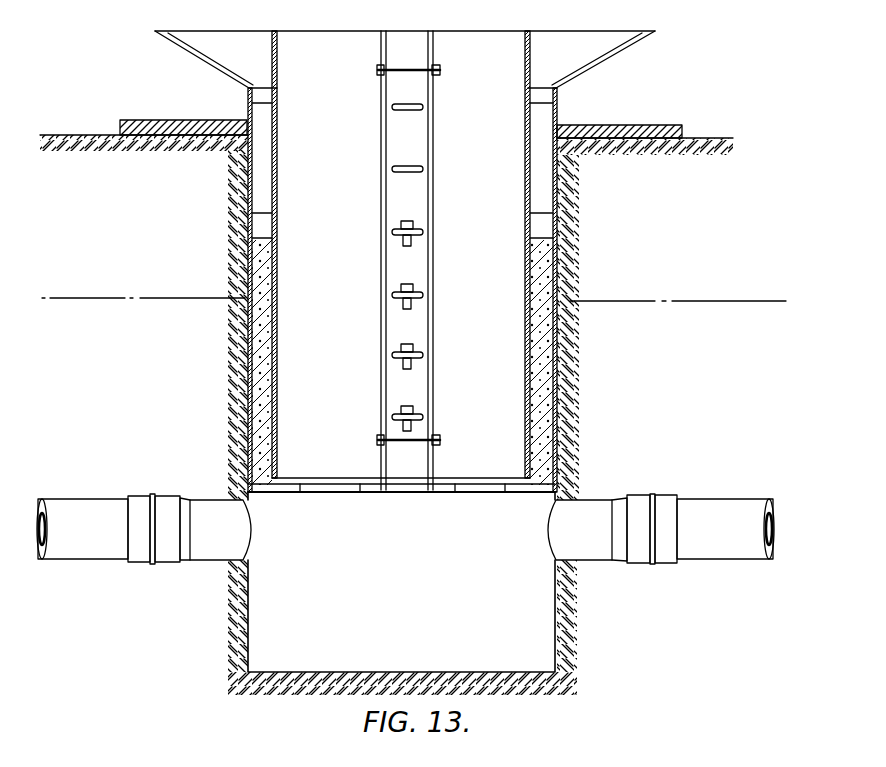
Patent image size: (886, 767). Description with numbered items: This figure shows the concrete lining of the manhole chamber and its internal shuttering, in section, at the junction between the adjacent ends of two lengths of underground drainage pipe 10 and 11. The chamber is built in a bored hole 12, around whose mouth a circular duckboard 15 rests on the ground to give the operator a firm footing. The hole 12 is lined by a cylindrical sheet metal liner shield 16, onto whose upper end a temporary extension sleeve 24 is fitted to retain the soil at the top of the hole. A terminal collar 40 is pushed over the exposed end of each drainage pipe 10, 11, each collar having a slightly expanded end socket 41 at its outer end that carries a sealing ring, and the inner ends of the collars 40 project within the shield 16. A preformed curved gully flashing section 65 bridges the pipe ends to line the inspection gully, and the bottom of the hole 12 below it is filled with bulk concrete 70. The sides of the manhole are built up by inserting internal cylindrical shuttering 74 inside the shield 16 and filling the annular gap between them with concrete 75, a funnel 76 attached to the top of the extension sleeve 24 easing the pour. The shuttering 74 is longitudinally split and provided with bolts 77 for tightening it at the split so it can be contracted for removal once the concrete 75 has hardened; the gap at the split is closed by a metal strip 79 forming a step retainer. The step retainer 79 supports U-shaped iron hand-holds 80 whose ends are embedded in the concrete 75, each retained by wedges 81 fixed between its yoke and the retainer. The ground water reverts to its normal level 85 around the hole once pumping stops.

The drainage pipe 10 is at (82, 535).
The drainage pipe 11 is at (731, 512).
The hole 12 is at (296, 366).
The circular duckboard 15 is at (612, 126).
The cylindrical liner shield 16 is at (558, 258).
The temporary extension sleeve 24 is at (560, 170).
The terminal collar 40 is at (210, 538).
The end socket 41 is at (165, 508).
The gully flashing section 65 is at (488, 482).
The bulk concrete filling 70 is at (560, 490).
The internal cylindrical shuttering 74 is at (527, 342).
The concrete lining 75 is at (540, 386).
The funnel 76 is at (622, 52).
The bolts 77 is at (437, 70).
The step retainer strip 79 is at (410, 50).
The hand-holds 80 is at (424, 107).
The wedges 81 is at (407, 284).
The ground water level 85 is at (155, 297).